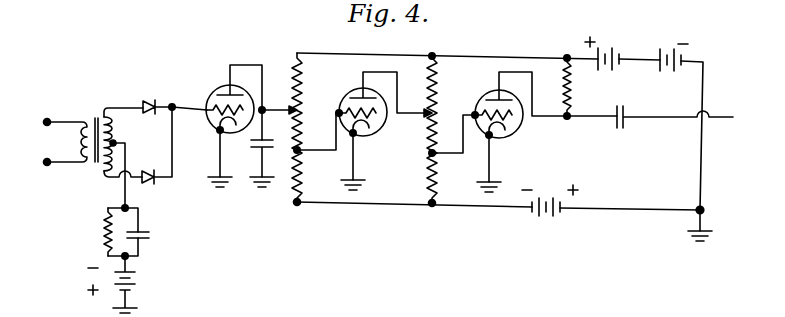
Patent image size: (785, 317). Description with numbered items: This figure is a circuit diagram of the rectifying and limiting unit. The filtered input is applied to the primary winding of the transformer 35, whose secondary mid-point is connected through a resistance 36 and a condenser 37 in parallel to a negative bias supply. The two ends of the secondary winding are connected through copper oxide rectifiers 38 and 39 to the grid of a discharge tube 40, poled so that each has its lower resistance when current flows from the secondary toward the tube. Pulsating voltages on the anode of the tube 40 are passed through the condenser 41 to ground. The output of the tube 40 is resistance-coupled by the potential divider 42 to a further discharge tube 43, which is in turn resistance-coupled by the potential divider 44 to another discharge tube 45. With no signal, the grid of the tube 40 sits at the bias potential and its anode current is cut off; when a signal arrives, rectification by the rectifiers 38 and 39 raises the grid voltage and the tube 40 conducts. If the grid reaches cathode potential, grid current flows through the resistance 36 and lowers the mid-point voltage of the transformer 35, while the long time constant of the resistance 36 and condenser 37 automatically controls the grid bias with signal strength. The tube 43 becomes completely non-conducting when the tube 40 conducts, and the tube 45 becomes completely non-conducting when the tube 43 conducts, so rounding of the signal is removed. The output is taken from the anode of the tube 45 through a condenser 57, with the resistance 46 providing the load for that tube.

The transformer 35 is at (97, 119).
The resistance 36 is at (102, 230).
The condenser 37 is at (152, 234).
The copper oxide rectifier 38 is at (144, 100).
The copper oxide rectifier 39 is at (148, 169).
The discharge tube 40 is at (208, 123).
The condenser 41 is at (255, 145).
The potential divider 42 is at (299, 83).
The discharge tube 43 is at (366, 135).
The potential divider 44 is at (437, 103).
The discharge tube 45 is at (506, 133).
The resistance 46 is at (572, 91).
The condenser 57 is at (624, 123).